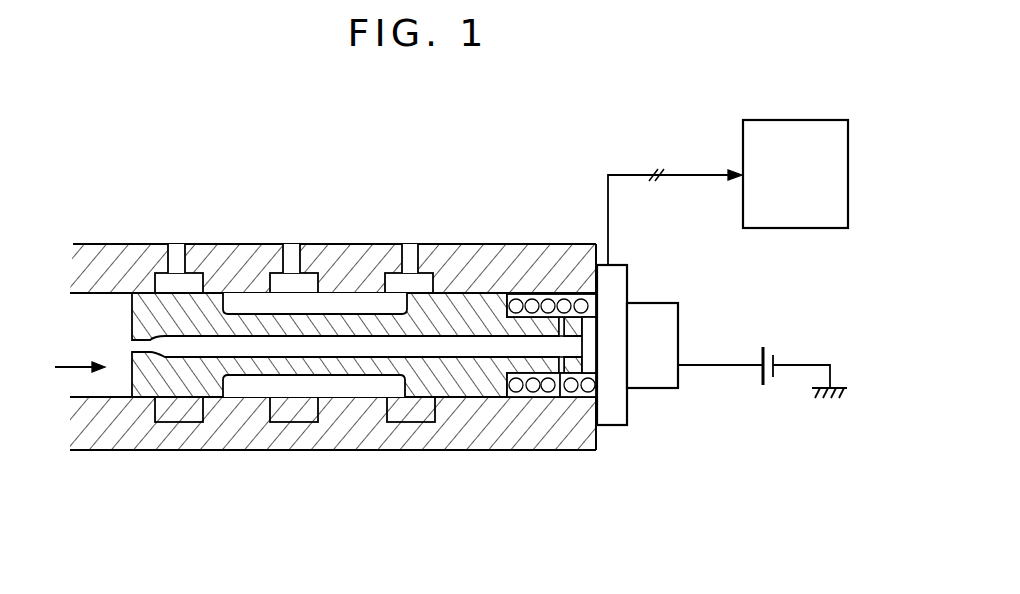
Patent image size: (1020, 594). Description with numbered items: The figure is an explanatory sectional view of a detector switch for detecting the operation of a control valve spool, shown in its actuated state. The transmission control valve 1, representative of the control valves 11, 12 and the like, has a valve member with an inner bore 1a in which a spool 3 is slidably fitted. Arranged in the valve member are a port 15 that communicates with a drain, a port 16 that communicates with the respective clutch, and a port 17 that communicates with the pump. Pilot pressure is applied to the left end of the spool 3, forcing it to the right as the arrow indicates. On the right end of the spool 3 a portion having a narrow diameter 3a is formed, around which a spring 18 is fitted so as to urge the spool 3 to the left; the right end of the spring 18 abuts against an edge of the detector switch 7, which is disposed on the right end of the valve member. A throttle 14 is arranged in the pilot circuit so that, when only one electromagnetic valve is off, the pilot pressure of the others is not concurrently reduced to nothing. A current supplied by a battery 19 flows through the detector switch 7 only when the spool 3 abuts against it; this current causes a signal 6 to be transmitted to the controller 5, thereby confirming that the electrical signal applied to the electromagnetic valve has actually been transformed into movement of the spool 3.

The transmission control valve 1 is at (333, 306).
The transmission control valve 11 is at (462, 233).
The transmission control valve 12 is at (333, 423).
The inner bore 1a is at (246, 302).
The spool 3 is at (130, 323).
The portion having a narrow diameter 3a is at (522, 378).
The controller 5 is at (790, 120).
The signal 6 is at (633, 175).
The detector switch 7 is at (665, 313).
The throttle 14 is at (563, 378).
The port 15 is at (177, 280).
The port 16 is at (293, 285).
The port 17 is at (410, 285).
The spring 18 is at (587, 378).
The battery 19 is at (772, 360).